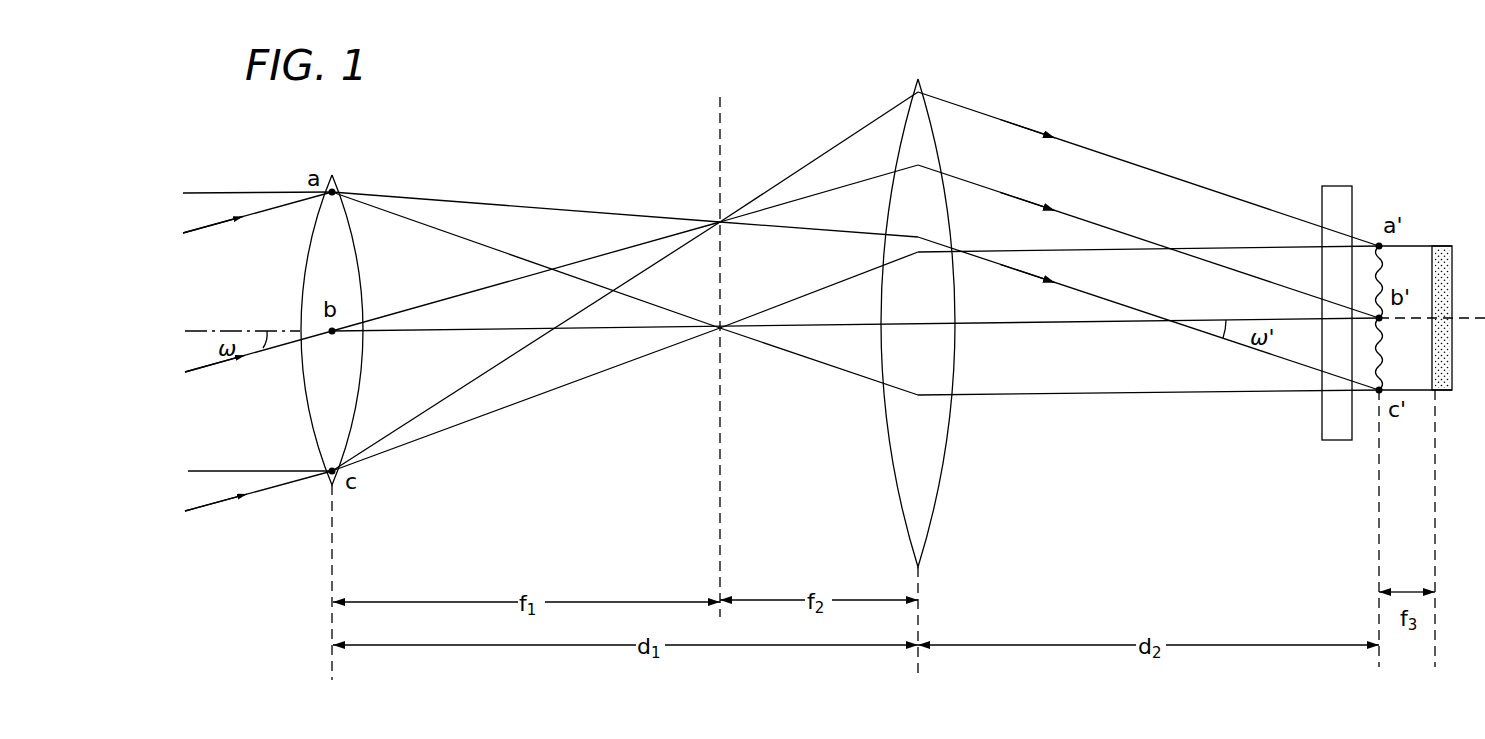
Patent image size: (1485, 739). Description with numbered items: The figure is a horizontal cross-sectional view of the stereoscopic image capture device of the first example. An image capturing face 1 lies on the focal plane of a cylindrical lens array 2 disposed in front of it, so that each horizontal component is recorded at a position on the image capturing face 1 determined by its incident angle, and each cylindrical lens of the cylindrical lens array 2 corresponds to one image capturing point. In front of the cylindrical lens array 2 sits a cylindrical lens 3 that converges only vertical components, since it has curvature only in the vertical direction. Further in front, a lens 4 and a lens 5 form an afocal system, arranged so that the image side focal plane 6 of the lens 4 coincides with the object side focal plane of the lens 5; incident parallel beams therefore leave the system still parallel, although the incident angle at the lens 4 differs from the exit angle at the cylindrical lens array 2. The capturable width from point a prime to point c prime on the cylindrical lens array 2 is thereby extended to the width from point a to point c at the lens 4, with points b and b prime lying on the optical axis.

The image capturing face 1 is at (1440, 258).
The cylindrical lens array 2 is at (1410, 258).
The cylindrical lens 3 is at (1336, 196).
The lens 4 is at (333, 236).
The lens 5 is at (921, 130).
The image side focal plane 6 is at (721, 136).